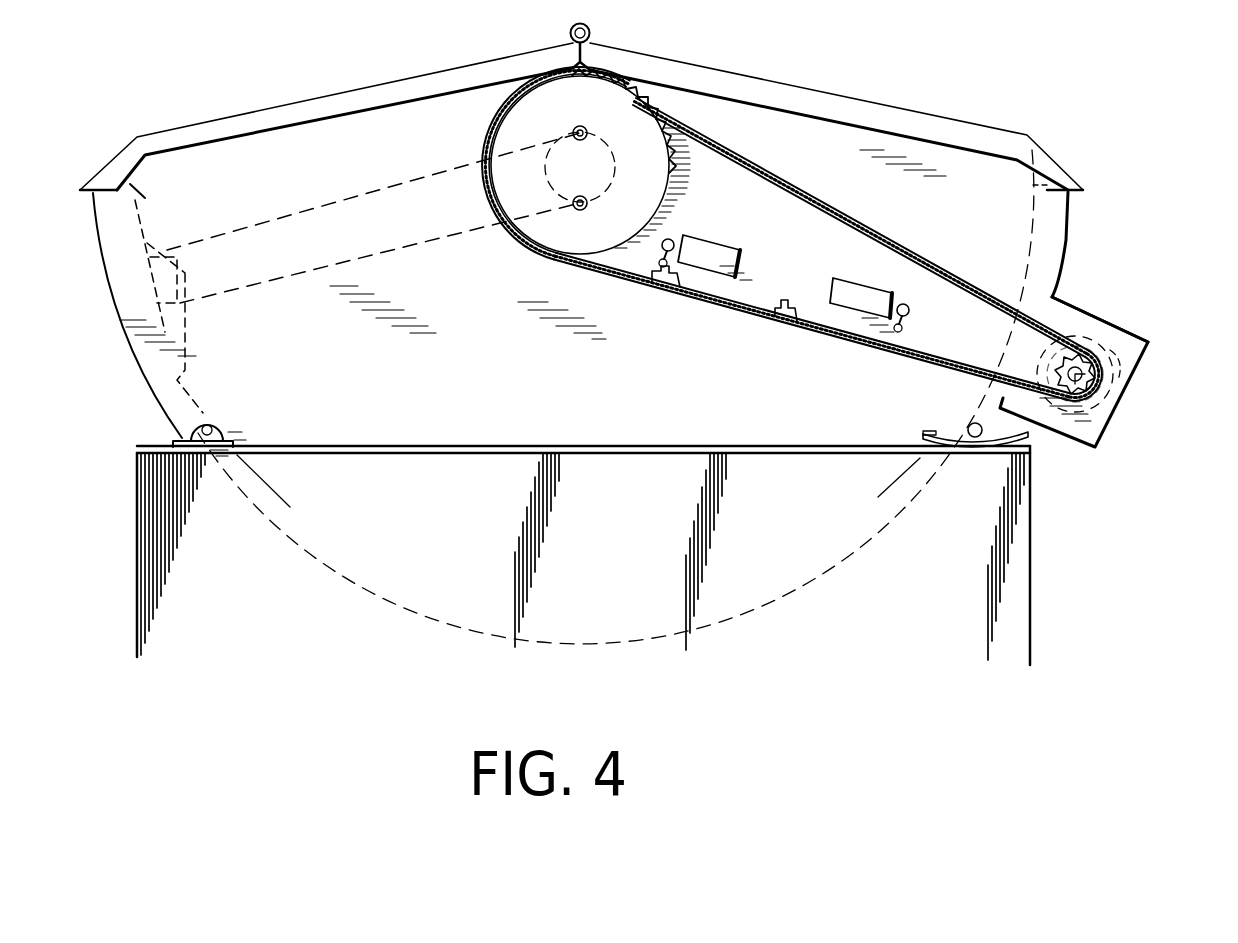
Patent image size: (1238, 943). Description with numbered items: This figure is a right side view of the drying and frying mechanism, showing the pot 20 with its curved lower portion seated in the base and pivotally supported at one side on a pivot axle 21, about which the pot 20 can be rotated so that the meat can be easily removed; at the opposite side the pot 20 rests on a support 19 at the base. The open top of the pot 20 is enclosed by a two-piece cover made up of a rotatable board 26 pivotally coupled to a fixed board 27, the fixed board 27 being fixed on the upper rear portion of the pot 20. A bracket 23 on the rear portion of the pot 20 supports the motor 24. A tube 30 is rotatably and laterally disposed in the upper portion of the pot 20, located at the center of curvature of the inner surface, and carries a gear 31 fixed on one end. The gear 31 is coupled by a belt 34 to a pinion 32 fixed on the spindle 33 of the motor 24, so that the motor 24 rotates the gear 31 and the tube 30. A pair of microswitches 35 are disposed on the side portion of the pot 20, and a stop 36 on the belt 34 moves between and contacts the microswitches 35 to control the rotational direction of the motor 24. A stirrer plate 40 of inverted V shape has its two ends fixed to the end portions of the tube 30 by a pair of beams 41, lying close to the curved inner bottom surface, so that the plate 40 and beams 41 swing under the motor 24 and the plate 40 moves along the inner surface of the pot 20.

The roller support 19 is at (968, 430).
The pot 20 is at (1068, 222).
The pivot axle 21 is at (212, 425).
The bracket 23 is at (1090, 447).
The motor 24 is at (1155, 362).
The rotatable board 26 is at (272, 108).
The fixed board 27 is at (927, 118).
The tube 30 is at (510, 100).
The gear 31 is at (617, 103).
The pinion 32 is at (1080, 352).
The spindle 33 is at (1098, 385).
The belt 34 is at (885, 240).
The microswitches 35 is at (718, 248).
The stop 36 is at (655, 280).
The plate 40 is at (150, 215).
The beams 41 is at (300, 213).